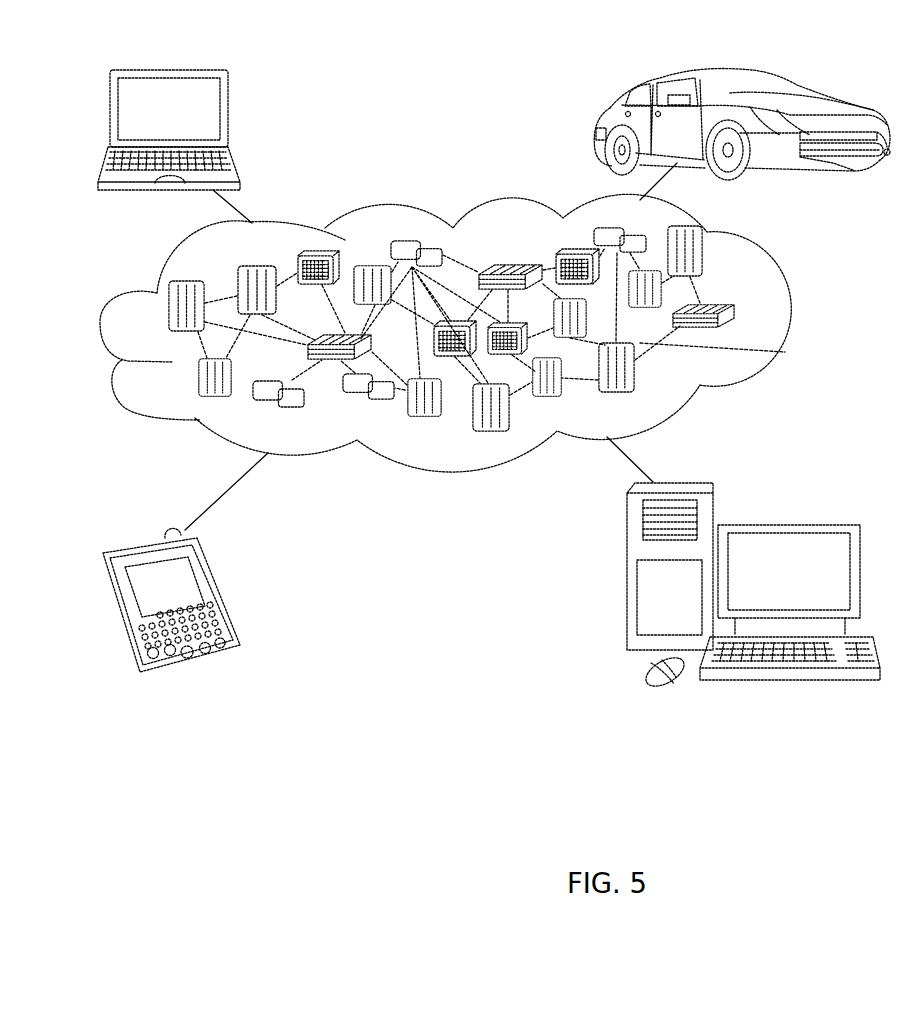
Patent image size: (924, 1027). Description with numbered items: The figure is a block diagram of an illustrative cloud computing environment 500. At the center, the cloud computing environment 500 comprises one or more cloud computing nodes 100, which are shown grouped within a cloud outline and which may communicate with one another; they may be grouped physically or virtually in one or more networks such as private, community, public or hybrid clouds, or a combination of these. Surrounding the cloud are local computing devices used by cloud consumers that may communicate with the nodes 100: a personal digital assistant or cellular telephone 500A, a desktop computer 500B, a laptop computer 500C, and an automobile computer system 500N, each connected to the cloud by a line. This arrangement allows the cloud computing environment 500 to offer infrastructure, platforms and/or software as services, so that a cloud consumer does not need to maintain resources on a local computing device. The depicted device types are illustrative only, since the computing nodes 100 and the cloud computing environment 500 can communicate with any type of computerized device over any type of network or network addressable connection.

The laptop computer 500C is at (231, 115).
The automobile computer system 500N is at (600, 128).
The cloud computing environment 500 is at (787, 315).
The cloud computing nodes 100 is at (737, 335).
The personal digital assistant (PDA) or cellular telephone 500A is at (218, 593).
The desktop computer 500B is at (787, 525).